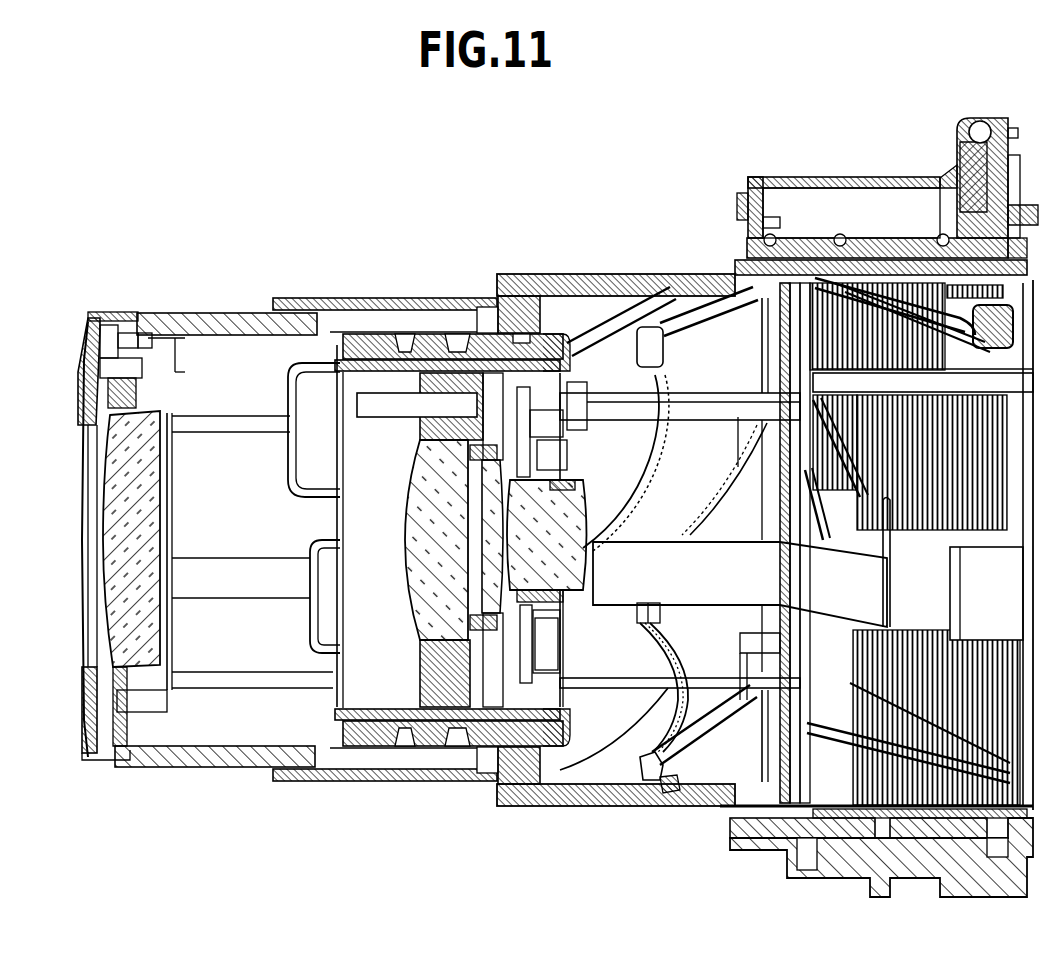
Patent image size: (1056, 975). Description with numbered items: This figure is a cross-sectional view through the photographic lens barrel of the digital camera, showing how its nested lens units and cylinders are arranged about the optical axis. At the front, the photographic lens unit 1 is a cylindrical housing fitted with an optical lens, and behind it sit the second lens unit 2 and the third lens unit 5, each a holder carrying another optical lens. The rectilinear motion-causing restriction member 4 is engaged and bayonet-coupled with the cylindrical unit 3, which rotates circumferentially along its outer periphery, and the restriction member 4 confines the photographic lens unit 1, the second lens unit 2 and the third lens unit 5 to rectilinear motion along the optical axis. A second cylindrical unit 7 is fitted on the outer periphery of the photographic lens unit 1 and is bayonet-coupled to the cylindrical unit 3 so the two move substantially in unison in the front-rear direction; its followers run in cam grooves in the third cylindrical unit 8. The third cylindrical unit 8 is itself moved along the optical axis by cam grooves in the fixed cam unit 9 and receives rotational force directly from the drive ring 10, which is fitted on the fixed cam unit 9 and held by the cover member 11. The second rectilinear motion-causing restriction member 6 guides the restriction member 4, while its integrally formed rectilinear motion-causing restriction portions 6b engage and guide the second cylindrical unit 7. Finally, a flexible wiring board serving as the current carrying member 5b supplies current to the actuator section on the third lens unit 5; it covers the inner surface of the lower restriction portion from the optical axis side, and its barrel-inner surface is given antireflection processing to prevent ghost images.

The photographic lens unit 1 is at (158, 266).
The second lens unit 2 is at (366, 521).
The cylindrical unit 3 is at (423, 300).
The rectilinear motion-causing restriction member 4 is at (370, 742).
The third lens unit 5 is at (603, 441).
The current carrying member 5b is at (617, 580).
The second rectilinear motion-causing restriction member 6 is at (803, 680).
The rectilinear motion-causing restriction portions 6b is at (710, 410).
The second cylindrical unit 7 is at (338, 298).
The third cylindrical unit 8 is at (637, 295).
The fixed cam unit 9 is at (873, 417).
The drive ring 10 is at (898, 243).
The cover member 11 is at (848, 867).